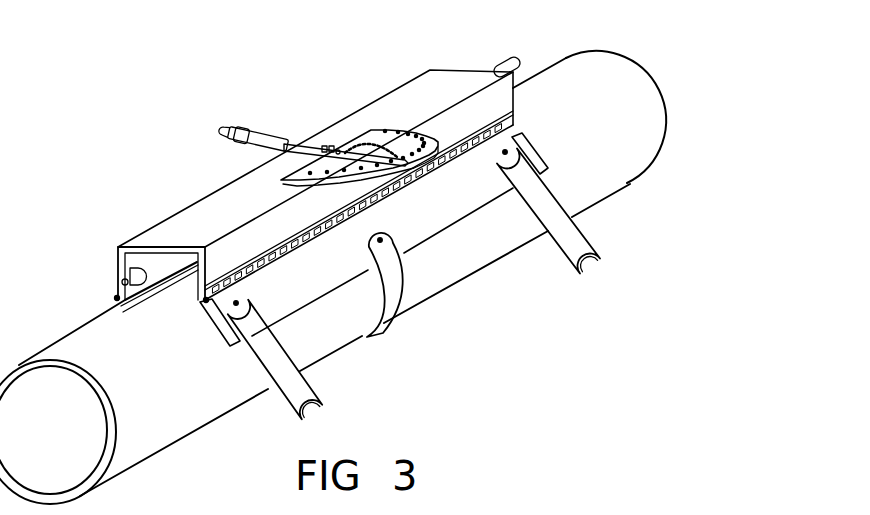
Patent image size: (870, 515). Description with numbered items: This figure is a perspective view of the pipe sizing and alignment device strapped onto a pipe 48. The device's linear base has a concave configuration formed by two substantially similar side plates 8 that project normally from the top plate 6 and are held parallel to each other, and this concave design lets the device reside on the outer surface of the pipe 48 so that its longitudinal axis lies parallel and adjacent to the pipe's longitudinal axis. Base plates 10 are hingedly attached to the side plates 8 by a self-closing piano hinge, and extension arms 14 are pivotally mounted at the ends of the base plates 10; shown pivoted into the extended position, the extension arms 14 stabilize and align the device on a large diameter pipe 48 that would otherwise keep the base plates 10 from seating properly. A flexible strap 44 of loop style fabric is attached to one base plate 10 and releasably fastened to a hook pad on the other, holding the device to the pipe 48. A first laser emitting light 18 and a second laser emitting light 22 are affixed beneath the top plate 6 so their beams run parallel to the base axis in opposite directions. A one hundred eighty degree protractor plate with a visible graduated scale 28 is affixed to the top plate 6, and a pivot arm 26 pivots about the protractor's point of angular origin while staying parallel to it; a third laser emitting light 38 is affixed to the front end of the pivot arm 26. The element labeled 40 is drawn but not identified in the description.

The top plate 6 is at (158, 231).
The side plates 8 is at (220, 262).
The base plates 10 is at (432, 215).
The extension arms 14 is at (598, 262).
The first laser emitting light 18 is at (130, 275).
The second laser emitting light 22 is at (513, 72).
The pivot arm 26 is at (302, 146).
The graduated scale 28 is at (290, 160).
The third laser emitting light 38 is at (242, 126).
The pivot 40 is at (330, 146).
The flexible strap 44 is at (397, 302).
The pipe 48 is at (650, 90).